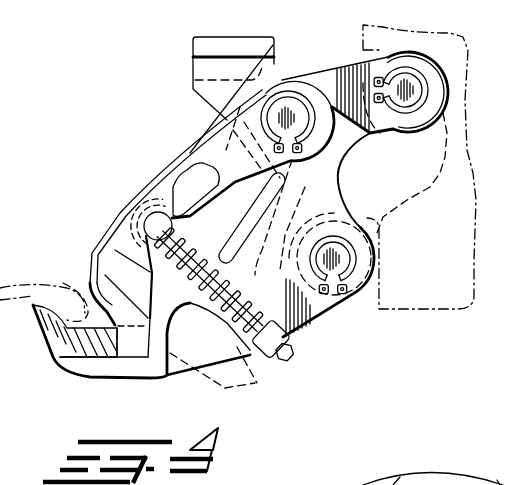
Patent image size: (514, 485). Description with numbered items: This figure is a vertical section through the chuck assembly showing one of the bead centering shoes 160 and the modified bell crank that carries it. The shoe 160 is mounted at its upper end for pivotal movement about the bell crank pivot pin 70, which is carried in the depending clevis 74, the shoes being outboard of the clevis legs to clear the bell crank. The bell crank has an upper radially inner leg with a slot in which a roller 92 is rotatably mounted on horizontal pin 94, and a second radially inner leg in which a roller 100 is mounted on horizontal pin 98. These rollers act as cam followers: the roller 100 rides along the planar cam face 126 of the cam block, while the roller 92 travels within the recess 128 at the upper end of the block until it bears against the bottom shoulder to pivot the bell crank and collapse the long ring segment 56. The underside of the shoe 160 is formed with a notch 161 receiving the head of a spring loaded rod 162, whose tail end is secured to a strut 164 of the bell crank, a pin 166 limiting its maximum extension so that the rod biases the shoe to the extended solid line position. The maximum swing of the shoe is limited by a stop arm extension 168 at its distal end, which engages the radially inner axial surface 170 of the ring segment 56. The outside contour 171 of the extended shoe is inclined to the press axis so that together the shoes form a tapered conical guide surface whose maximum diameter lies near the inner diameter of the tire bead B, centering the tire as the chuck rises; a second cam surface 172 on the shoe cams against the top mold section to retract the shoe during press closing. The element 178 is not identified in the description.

The bead centering shoe 160 is at (160, 176).
The second cam surface 172 is at (181, 153).
The clevis 74 is at (276, 46).
The pin 70 is at (293, 110).
The horizontal pin 94 is at (417, 97).
The roller 92 is at (418, 132).
The recess 128 is at (443, 160).
The roller 100 is at (368, 224).
The horizontal pin 98 is at (349, 262).
The cam face 126 is at (373, 293).
The spring loaded rod 162 is at (222, 322).
The notch 161 is at (148, 279).
The strut 164 is at (257, 368).
The pin 166 is at (292, 348).
The outside contour 171 is at (102, 243).
The tire bead B is at (70, 297).
The long arcuate ring segment 56 is at (50, 337).
The radially inner axial surface 170 is at (107, 350).
The stop arm extension 168 is at (130, 350).
The arc member 178 is at (458, 484).